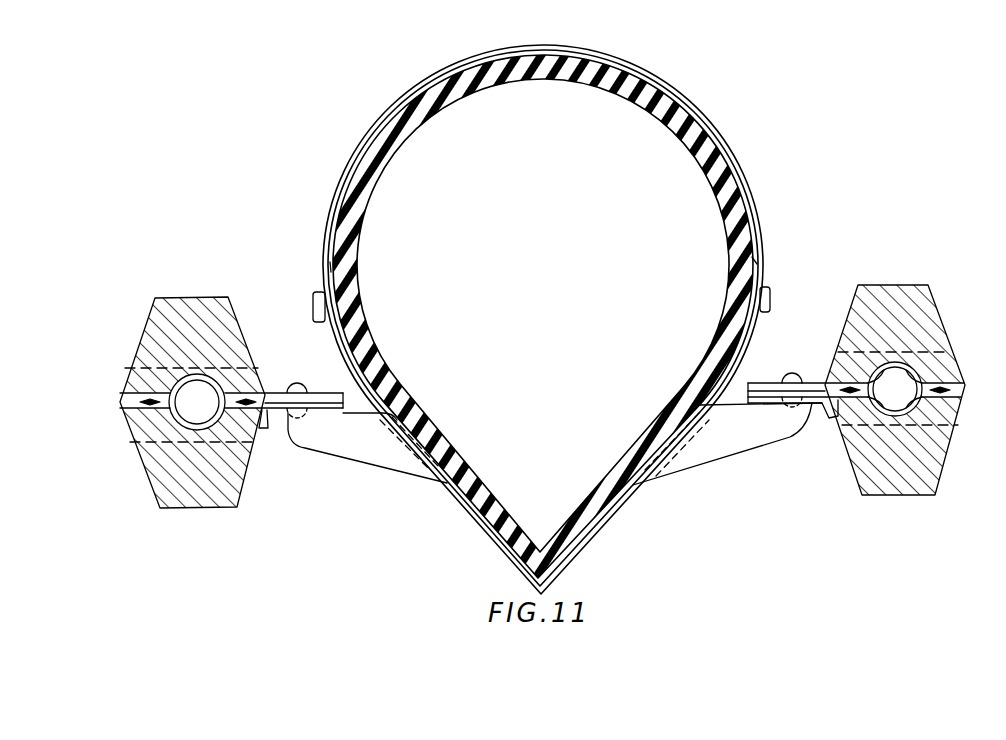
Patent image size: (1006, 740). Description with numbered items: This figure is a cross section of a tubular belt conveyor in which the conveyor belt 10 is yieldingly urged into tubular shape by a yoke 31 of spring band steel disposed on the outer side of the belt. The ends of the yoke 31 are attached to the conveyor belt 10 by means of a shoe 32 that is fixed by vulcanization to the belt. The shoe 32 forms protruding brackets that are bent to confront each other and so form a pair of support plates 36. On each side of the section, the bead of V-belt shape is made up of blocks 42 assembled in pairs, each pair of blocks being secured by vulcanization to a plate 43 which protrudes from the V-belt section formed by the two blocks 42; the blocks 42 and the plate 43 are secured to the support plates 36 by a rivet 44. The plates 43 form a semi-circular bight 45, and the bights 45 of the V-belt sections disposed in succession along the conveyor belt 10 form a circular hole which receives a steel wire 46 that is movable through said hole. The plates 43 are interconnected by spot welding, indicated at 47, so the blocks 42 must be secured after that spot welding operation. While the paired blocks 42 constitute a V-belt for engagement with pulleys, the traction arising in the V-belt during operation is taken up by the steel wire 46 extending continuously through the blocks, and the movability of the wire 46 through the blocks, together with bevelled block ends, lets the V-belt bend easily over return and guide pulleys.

The conveyor belt 10 is at (372, 184).
The yoke 31 is at (757, 203).
The shoe 32 is at (700, 448).
The support plate 36 is at (812, 404).
The block 42 is at (228, 487).
The plate 43 is at (815, 383).
The rivet 44 is at (792, 374).
The semi-circular bight 45 is at (910, 362).
The steel wire 46 is at (895, 398).
The spot welding 47 is at (838, 414).